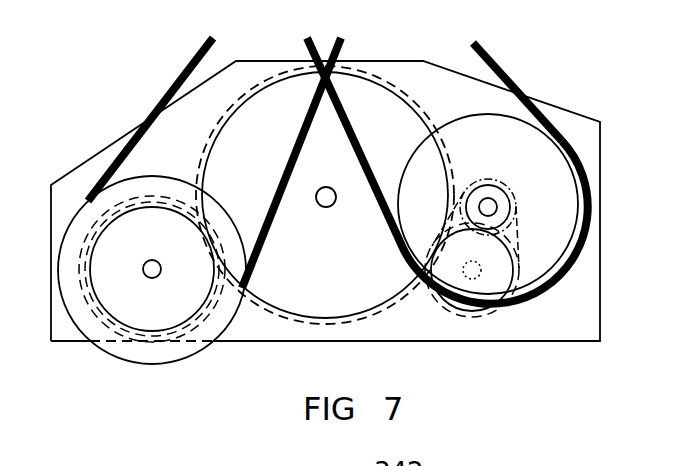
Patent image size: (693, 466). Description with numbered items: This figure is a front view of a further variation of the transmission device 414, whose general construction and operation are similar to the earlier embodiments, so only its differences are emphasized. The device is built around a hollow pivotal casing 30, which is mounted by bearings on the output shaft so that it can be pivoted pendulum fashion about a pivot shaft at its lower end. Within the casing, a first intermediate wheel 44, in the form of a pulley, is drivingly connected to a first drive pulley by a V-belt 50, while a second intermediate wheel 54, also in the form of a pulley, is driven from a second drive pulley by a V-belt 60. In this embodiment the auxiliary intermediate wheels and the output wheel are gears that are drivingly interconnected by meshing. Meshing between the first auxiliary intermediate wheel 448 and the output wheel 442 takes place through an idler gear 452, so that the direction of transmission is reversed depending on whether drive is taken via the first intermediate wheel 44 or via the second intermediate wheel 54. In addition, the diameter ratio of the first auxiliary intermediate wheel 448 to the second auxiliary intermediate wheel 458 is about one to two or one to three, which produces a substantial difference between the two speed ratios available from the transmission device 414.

The transmission device 414 is at (102, 100).
The V-belt 60 is at (167, 98).
The output wheel 442 is at (367, 118).
The V-belt 50 is at (508, 72).
The pivotal casing 30 is at (578, 137).
The first auxiliary intermediate wheel 448 is at (503, 207).
The first intermediate wheel 44 is at (575, 235).
The second intermediate wheel 54 is at (87, 316).
The second auxiliary intermediate wheel 458 is at (180, 298).
The idler gear 452 is at (508, 273).